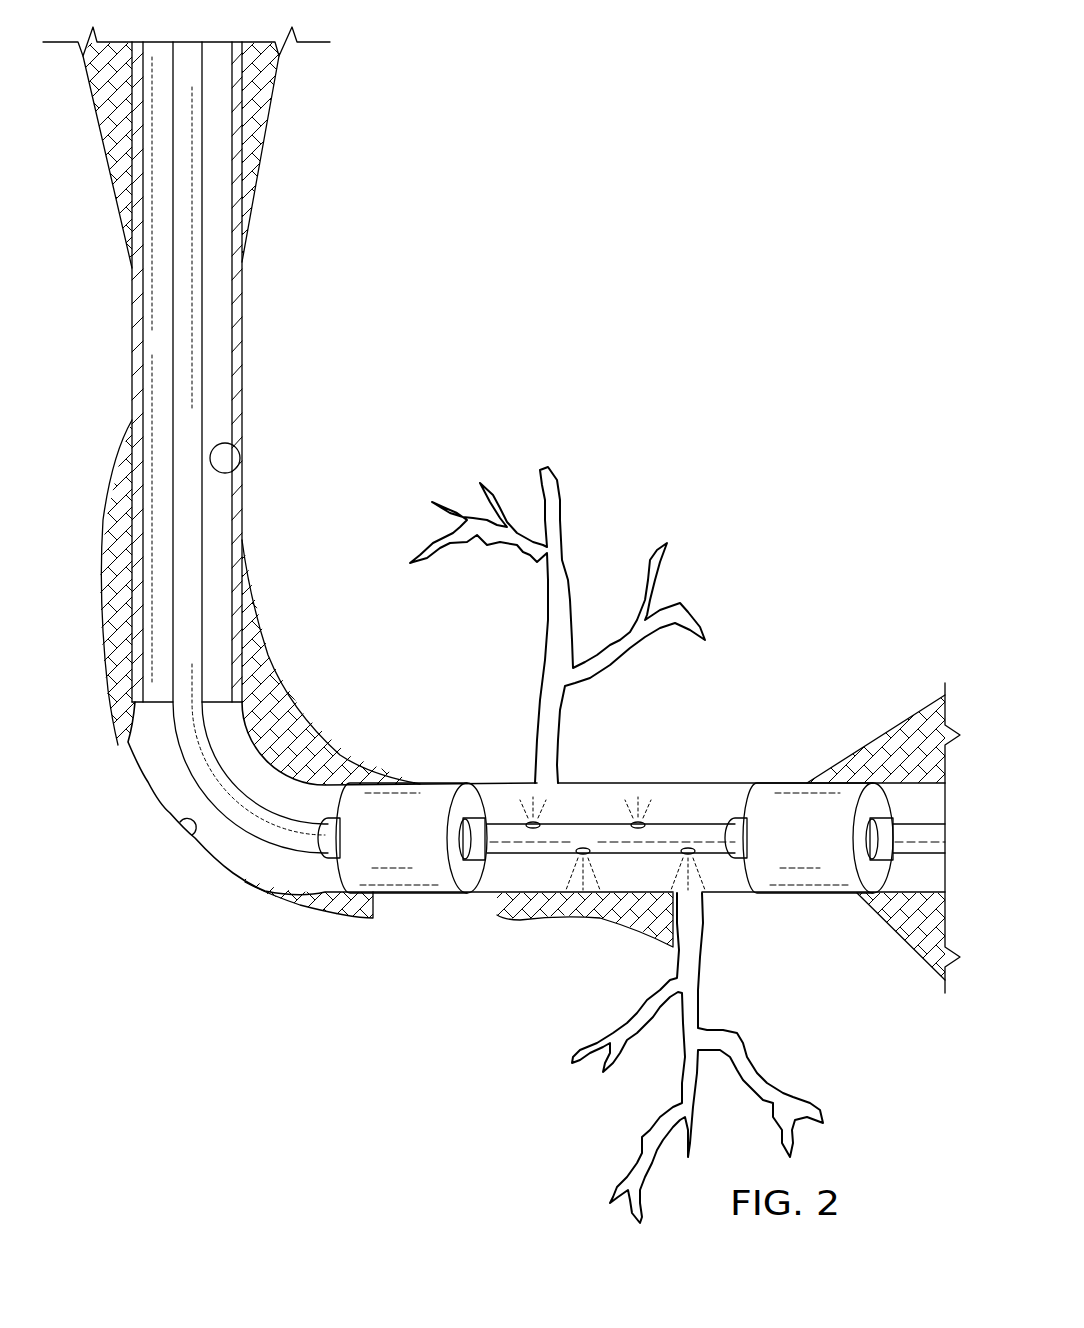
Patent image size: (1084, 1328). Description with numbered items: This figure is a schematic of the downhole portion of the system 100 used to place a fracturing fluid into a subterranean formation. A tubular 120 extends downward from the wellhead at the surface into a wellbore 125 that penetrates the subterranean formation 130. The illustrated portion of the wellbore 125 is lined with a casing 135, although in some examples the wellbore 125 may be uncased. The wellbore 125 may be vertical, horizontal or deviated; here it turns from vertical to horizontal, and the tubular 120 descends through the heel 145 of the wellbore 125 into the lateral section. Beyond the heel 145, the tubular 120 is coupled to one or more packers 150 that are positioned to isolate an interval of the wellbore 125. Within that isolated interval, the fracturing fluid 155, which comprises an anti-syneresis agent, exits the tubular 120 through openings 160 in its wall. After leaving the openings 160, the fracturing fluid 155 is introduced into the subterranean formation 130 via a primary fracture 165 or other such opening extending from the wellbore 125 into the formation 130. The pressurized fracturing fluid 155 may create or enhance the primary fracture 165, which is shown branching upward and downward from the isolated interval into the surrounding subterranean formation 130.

The system 100 is at (578, 310).
The tubular 120 is at (173, 342).
The wellbore 125 is at (242, 267).
The subterranean formation 130 is at (861, 613).
The casing 135 is at (238, 451).
The heel 145 is at (181, 825).
The packers 150 is at (432, 884).
The fracturing fluid 155 is at (540, 818).
The openings 160 is at (690, 846).
The primary fracture 165 is at (540, 728).